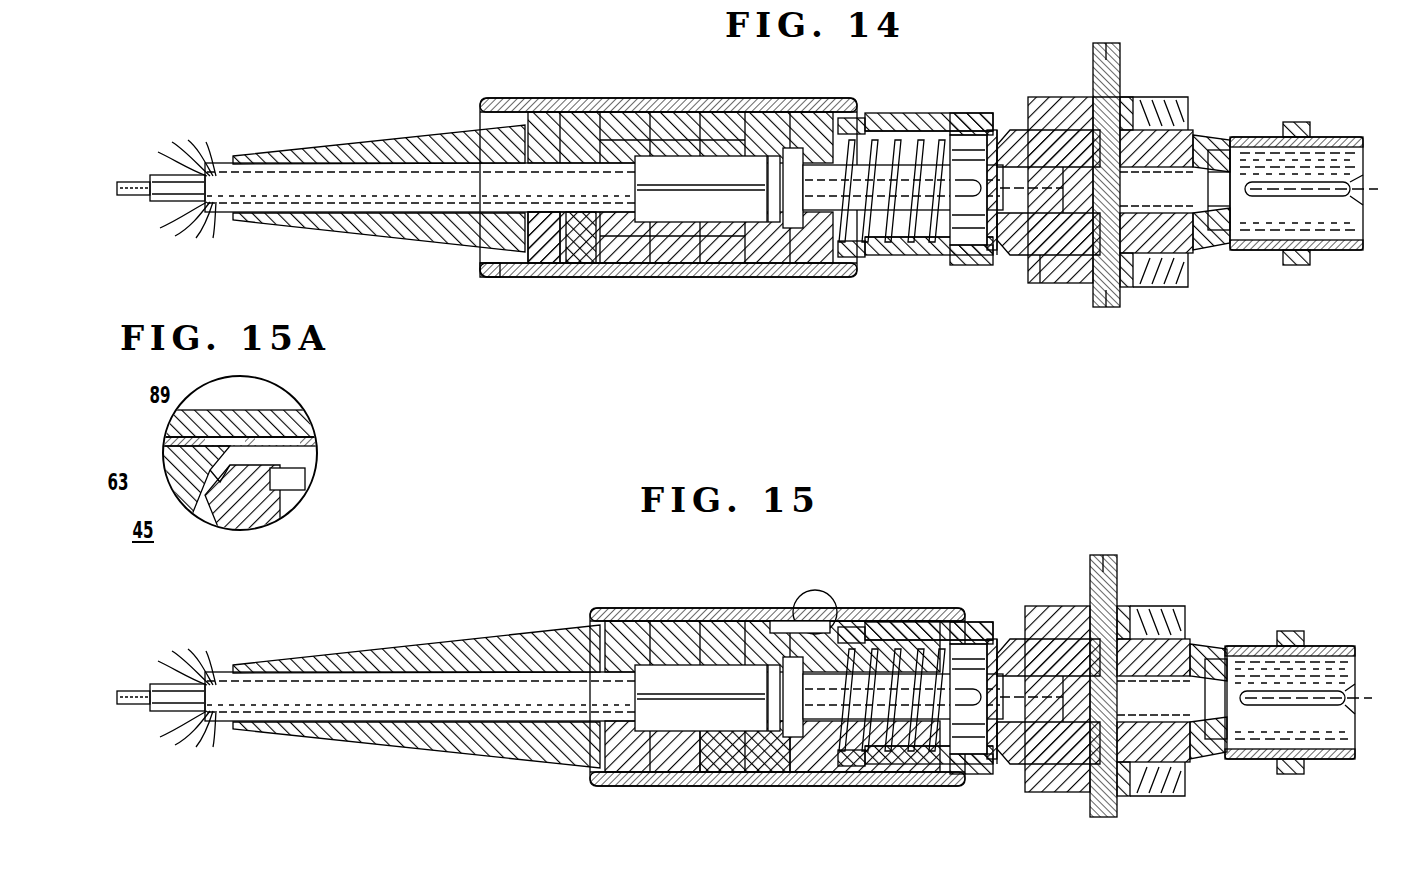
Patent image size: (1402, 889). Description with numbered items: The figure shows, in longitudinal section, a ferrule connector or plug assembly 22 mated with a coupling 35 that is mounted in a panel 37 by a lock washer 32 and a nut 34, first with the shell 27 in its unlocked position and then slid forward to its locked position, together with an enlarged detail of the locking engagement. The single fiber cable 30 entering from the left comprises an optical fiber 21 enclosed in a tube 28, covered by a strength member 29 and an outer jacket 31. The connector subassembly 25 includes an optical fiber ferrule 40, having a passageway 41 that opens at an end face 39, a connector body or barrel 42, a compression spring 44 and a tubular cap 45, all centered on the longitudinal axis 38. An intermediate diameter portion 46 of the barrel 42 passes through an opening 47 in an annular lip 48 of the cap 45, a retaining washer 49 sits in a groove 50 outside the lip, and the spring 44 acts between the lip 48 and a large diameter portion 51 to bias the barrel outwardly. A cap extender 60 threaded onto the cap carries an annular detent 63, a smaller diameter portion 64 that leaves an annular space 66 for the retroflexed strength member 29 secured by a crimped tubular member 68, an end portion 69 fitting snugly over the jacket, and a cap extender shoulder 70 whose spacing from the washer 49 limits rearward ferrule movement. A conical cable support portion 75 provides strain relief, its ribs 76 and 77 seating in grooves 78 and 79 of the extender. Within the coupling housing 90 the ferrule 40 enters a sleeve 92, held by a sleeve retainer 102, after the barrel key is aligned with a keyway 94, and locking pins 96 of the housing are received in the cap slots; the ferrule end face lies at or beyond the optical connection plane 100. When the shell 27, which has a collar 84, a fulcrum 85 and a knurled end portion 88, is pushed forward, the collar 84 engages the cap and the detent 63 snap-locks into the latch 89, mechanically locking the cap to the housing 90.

In FIG. 14, the optical fiber 21 is at (136, 181).
In FIG. 15, the optical fiber 21 is at (136, 691).
In FIG. 14, the plug assembly 22 is at (645, 96).
In FIG. 14, the connector subassembly 25 is at (895, 113).
In FIG. 14, the shell 27 is at (500, 100).
In FIG. 15, the shell 27 is at (660, 786).
In FIG. 14, the tube 28 is at (152, 201).
In FIG. 15, the tube 28 is at (152, 709).
In FIG. 14, the strength member 29 is at (193, 153).
In FIG. 15, the strength member 29 is at (190, 662).
In FIG. 14, the single fiber cable 30 is at (187, 265).
In FIG. 15, the single fiber cable 30 is at (185, 776).
In FIG. 14, the outer jacket 31 is at (222, 163).
In FIG. 15, the outer jacket 31 is at (218, 672).
In FIG. 14, the lock washer 32 is at (1118, 112).
In FIG. 14, the nut 34 is at (1150, 100).
In FIG. 14, the coupling 35 is at (1052, 70).
In FIG. 15, the coupling 35 is at (1137, 592).
In FIG. 14, the panel 37 is at (1108, 307).
In FIG. 15, the panel 37 is at (1102, 556).
In FIG. 14, the longitudinal axis 38 is at (1350, 216).
In FIG. 15, the longitudinal axis 38 is at (1345, 736).
In FIG. 14, the end face 39 is at (1135, 188).
In FIG. 14, the optical fiber ferrule 40 is at (1003, 156).
In FIG. 15, the optical fiber ferrule 40 is at (1060, 764).
In FIG. 14, the passageway 41 is at (1078, 250).
In FIG. 14, the connector body 42 is at (930, 135).
In FIG. 14, the compression spring 44 is at (858, 140).
In FIG. 15, the compression spring 44 is at (872, 649).
In FIG. 14, the tubular cap 45 is at (993, 256).
In FIG. 15A, the tubular cap 45 is at (210, 510).
In FIG. 15, the tubular cap 45 is at (990, 640).
In FIG. 14, the intermediate diameter portion 46 is at (903, 255).
In FIG. 15, the intermediate diameter portion 46 is at (902, 766).
In FIG. 14, the opening 47 is at (788, 263).
In FIG. 14, the annular lip 48 is at (820, 272).
In FIG. 14, the retaining washer 49 is at (768, 263).
In FIG. 15, the groove 50 is at (758, 614).
In FIG. 14, the large diameter portion 51 is at (1008, 250).
In FIG. 15, the large diameter portion 51 is at (1003, 758).
In FIG. 14, the cap extender 60 is at (607, 118).
In FIG. 15A, the annular detent 63 is at (175, 462).
In FIG. 14, the smaller diameter portion 64 is at (645, 263).
In FIG. 14, the annular space 66 is at (612, 263).
In FIG. 14, the crimped tubular member 68 is at (740, 156).
In FIG. 14, the end portion 69 is at (548, 263).
In FIG. 14, the cap extender shoulder 70 is at (738, 263).
In FIG. 14, the cable support portion 75 is at (398, 140).
In FIG. 15, the cable support portion 75 is at (368, 648).
In FIG. 14, the rib 76 is at (565, 113).
In FIG. 14, the rib 77 is at (695, 115).
In FIG. 14, the groove 78 is at (572, 263).
In FIG. 14, the groove 79 is at (682, 263).
In FIG. 14, the collar 84 is at (860, 263).
In FIG. 15, the fulcrum 85 is at (745, 786).
In FIG. 14, the knurled end portion 88 is at (505, 277).
In FIG. 15A, the latch 89 is at (182, 436).
In FIG. 14, the housing 90 is at (1040, 284).
In FIG. 15, the housing 90 is at (1036, 606).
In FIG. 14, the sleeve 92 is at (1190, 252).
In FIG. 14, the keyway 94 is at (1322, 186).
In FIG. 14, the locking pin 96 is at (935, 258).
In FIG. 15, the locking pin 96 is at (920, 648).
In FIG. 14, the optical connection plane 100 is at (1112, 48).
In FIG. 15, the optical connection plane 100 is at (1108, 553).
In FIG. 14, the sleeve retainer 102 is at (1212, 140).